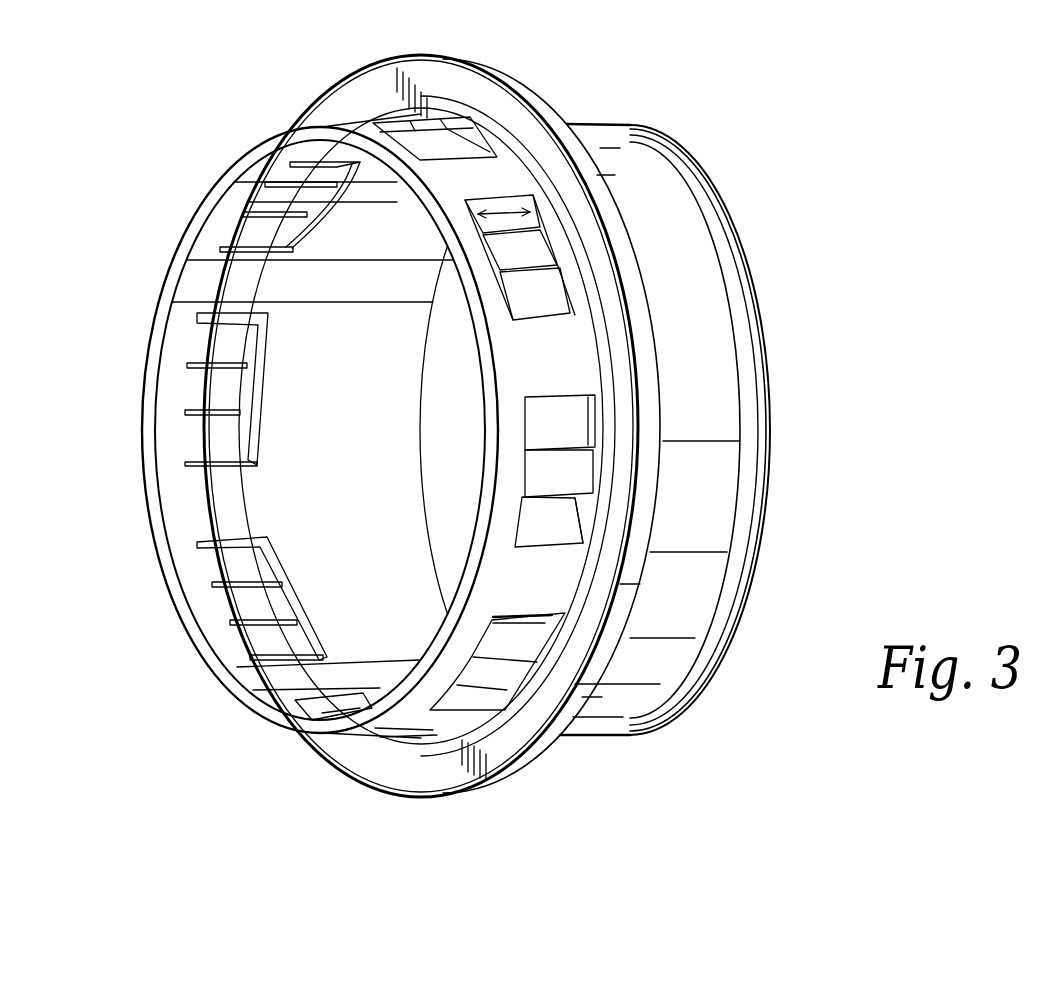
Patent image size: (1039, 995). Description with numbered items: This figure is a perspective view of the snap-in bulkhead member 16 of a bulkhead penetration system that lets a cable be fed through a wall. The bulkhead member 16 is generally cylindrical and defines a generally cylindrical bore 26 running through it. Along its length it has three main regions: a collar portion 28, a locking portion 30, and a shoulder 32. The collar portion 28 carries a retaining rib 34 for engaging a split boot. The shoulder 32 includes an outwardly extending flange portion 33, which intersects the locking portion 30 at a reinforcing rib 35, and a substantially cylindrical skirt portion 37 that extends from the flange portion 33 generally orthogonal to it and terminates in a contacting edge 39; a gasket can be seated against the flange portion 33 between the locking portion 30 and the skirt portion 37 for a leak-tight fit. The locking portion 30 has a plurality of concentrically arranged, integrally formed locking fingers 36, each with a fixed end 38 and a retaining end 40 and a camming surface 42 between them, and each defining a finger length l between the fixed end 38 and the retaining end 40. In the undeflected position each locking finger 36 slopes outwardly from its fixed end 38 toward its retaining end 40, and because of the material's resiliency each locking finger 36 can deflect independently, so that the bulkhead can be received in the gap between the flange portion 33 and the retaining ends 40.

The bulkhead member 16 is at (660, 142).
The bore 26 is at (237, 680).
The collar portion 28 is at (710, 410).
The locking portion 30 is at (365, 795).
The shoulder 32 is at (536, 772).
The flange portion 33 is at (387, 92).
The retaining rib 34 is at (743, 370).
The reinforcing rib 35 is at (493, 140).
The locking fingers 36 is at (233, 562).
The skirt portion 37 is at (567, 140).
The fixed end 38 is at (443, 683).
The contacting edge 39 is at (480, 88).
The retaining end 40 is at (477, 637).
The camming surface 42 is at (420, 123).
The finger length l is at (513, 217).